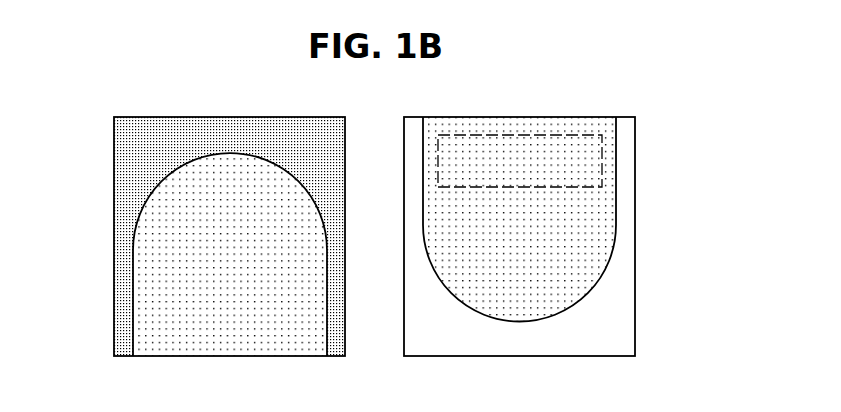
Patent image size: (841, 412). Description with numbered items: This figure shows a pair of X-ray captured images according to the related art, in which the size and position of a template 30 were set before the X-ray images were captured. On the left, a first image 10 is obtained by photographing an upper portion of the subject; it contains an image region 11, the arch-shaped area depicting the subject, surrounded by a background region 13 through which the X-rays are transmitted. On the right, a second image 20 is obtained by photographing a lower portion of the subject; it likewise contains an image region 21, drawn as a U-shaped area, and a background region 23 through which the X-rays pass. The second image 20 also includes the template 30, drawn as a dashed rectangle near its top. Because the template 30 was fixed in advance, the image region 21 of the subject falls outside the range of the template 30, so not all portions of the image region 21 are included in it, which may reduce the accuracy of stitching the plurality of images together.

The first image 10 is at (229, 253).
The image region 11 is at (152, 269).
The background region 13 is at (121, 204).
The second image 20 is at (519, 253).
The image region 21 is at (596, 255).
The background region 23 is at (628, 210).
The template 30 is at (602, 160).